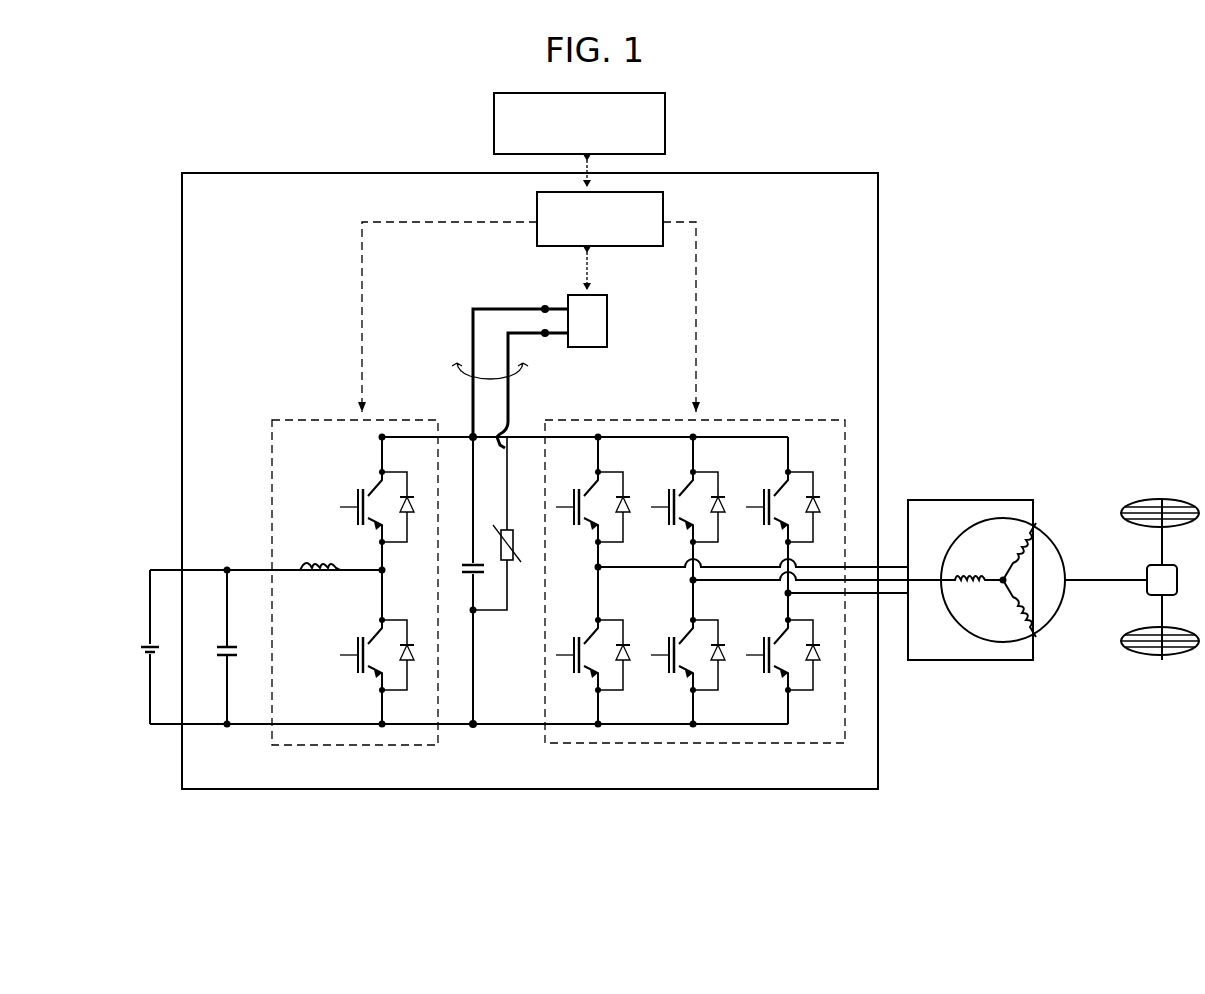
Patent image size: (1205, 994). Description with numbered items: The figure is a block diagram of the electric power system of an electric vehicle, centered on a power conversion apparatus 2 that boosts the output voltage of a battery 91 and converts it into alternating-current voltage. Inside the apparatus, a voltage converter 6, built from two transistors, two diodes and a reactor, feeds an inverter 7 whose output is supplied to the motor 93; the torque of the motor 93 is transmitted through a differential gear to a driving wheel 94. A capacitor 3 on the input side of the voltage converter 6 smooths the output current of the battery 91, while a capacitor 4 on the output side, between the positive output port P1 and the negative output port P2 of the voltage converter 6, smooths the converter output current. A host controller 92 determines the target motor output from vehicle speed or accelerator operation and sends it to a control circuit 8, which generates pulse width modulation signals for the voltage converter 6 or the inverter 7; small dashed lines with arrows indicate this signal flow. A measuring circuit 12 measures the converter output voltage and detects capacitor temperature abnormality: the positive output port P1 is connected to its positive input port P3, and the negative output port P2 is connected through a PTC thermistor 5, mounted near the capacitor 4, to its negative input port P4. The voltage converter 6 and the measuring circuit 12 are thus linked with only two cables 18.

The power conversion apparatus 2 is at (330, 173).
The host controller 92 is at (665, 127).
The control circuit 8 is at (663, 200).
The measuring circuit 12 is at (608, 307).
The positive input port P3 is at (545, 307).
The negative input port P4 is at (545, 335).
The cables 18 is at (460, 365).
The positive output port P1 is at (470, 435).
The negative output port P2 is at (475, 745).
The battery 91 is at (148, 645).
The capacitor 3 is at (232, 646).
The voltage converter 6 is at (398, 748).
The capacitor 4 is at (468, 558).
The thermistor 5 is at (510, 562).
The inverter 7 is at (808, 746).
The motor 93 is at (1043, 548).
The driving wheel 94 is at (1160, 500).